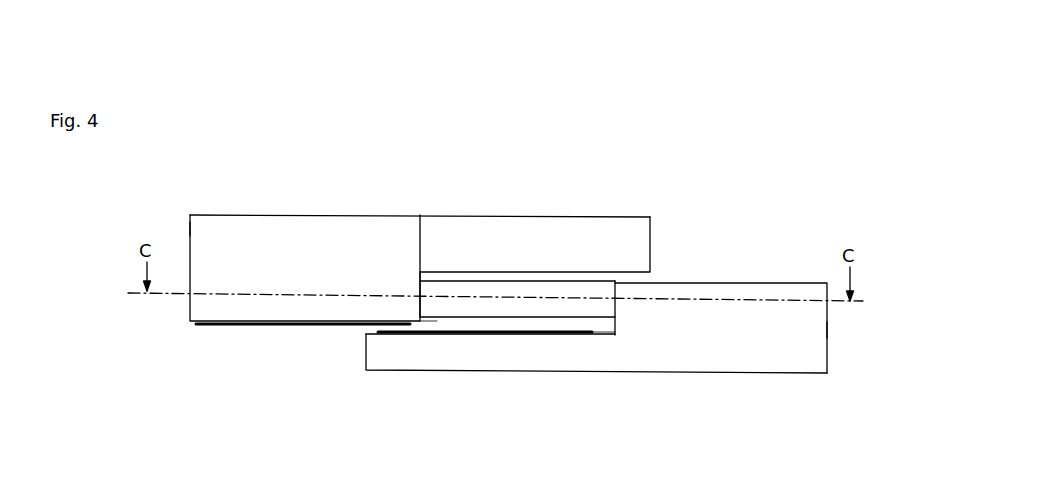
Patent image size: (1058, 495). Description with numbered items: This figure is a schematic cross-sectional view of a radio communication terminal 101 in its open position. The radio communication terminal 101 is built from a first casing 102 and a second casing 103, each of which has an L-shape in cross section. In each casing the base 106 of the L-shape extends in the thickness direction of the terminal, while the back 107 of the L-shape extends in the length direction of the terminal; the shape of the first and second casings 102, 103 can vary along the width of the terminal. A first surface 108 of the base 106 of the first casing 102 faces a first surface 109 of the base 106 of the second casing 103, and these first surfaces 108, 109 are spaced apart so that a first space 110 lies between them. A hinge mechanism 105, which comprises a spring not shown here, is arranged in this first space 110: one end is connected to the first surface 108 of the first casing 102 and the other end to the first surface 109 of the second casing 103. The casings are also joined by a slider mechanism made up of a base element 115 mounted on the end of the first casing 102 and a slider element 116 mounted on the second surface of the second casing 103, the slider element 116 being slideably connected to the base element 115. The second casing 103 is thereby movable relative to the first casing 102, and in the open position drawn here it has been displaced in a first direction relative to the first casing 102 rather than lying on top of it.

The radio communication terminal 101 is at (705, 175).
The first casing 102 is at (278, 250).
The second casing 103 is at (786, 365).
The hinge mechanism 105 is at (561, 297).
The base 106 is at (188, 226).
The back 107 is at (504, 216).
The first surface 108 is at (421, 276).
The first surface 109 is at (613, 325).
The first space 110 is at (437, 323).
The base element 115 is at (233, 327).
The slider element 116 is at (490, 337).